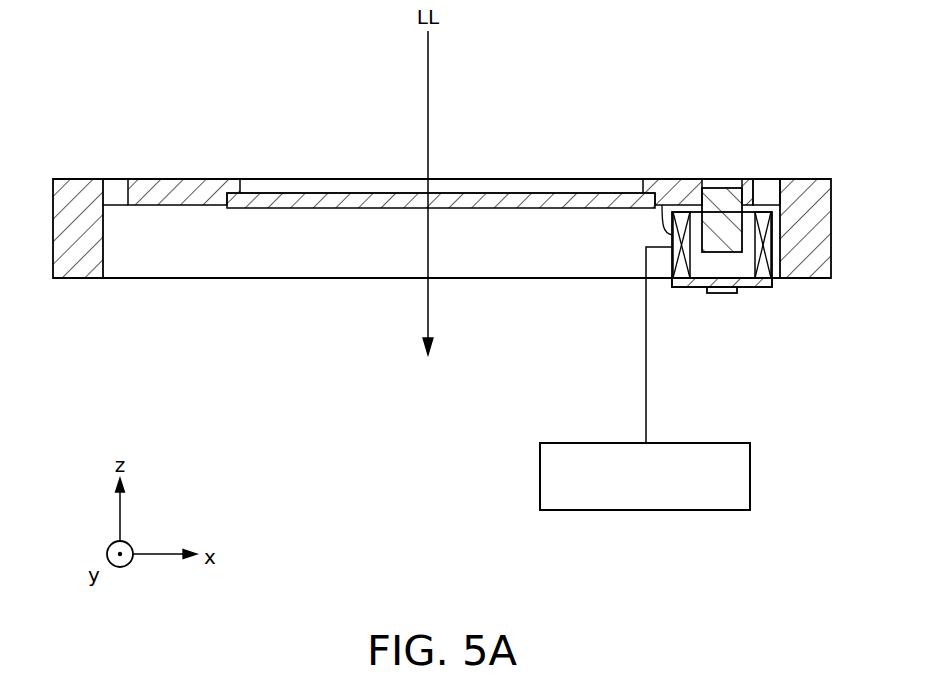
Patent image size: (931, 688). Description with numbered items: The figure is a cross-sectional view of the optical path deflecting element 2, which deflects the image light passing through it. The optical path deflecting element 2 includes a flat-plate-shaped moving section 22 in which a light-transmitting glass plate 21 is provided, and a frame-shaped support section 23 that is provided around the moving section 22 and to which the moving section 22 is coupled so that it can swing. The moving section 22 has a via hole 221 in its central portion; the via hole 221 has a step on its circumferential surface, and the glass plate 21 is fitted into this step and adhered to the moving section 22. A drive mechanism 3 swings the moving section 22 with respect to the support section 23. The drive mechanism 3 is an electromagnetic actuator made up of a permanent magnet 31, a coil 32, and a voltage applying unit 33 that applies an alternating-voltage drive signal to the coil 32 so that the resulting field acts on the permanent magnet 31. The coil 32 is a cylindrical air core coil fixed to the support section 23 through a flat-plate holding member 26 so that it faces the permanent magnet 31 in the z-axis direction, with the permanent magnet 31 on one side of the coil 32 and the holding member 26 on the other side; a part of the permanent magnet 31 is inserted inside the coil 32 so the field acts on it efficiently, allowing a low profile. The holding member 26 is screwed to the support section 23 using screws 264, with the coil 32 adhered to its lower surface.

The optical path deflecting element 2 is at (126, 128).
The drive mechanism 3 is at (776, 150).
The glass plate 21 is at (573, 205).
The moving section 22 is at (178, 183).
The via hole 221 is at (298, 191).
The support section 23 is at (78, 262).
The holding member 26 is at (750, 289).
The screw 264 is at (717, 294).
The permanent magnet 31 is at (730, 188).
The coil 32 is at (664, 185).
The voltage applying unit 33 is at (655, 512).